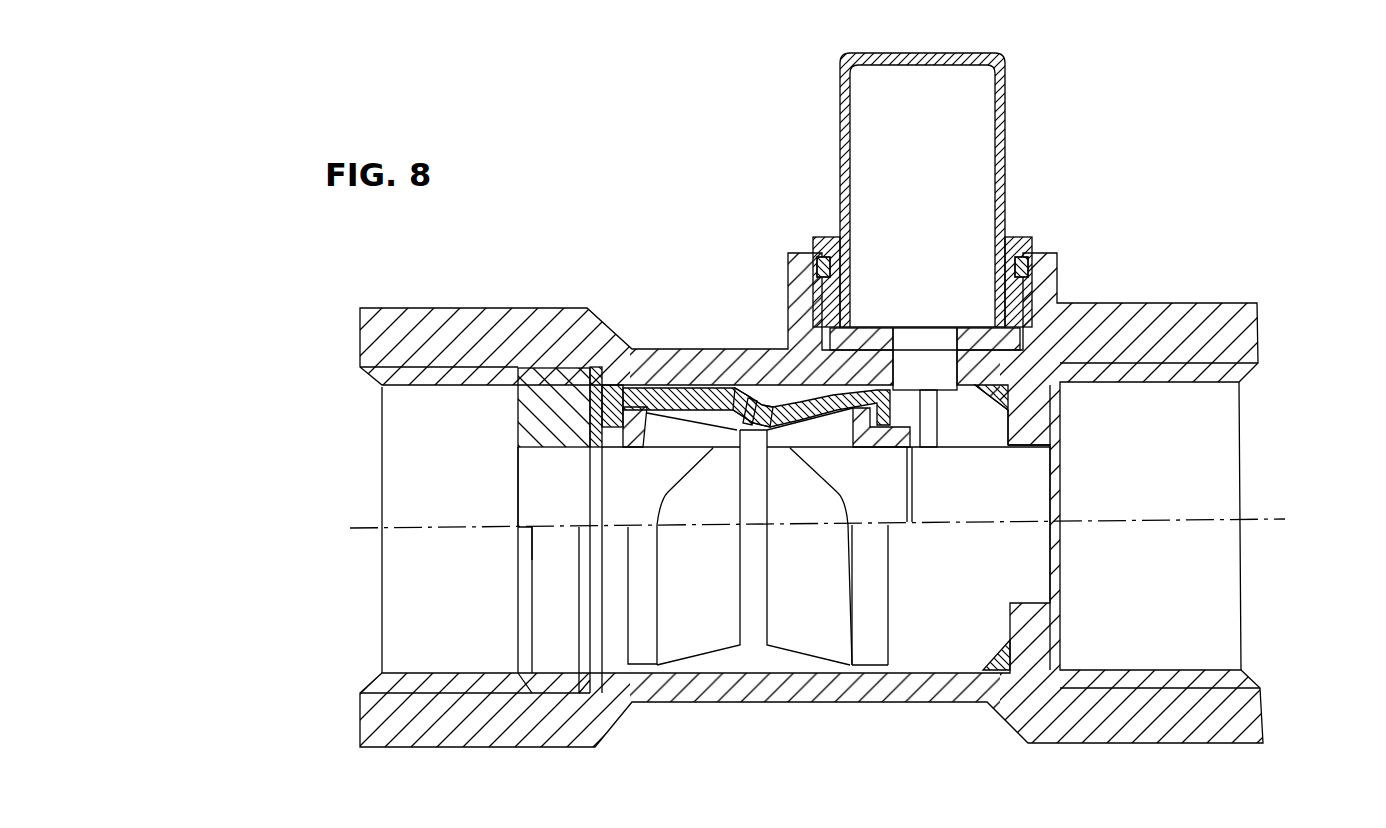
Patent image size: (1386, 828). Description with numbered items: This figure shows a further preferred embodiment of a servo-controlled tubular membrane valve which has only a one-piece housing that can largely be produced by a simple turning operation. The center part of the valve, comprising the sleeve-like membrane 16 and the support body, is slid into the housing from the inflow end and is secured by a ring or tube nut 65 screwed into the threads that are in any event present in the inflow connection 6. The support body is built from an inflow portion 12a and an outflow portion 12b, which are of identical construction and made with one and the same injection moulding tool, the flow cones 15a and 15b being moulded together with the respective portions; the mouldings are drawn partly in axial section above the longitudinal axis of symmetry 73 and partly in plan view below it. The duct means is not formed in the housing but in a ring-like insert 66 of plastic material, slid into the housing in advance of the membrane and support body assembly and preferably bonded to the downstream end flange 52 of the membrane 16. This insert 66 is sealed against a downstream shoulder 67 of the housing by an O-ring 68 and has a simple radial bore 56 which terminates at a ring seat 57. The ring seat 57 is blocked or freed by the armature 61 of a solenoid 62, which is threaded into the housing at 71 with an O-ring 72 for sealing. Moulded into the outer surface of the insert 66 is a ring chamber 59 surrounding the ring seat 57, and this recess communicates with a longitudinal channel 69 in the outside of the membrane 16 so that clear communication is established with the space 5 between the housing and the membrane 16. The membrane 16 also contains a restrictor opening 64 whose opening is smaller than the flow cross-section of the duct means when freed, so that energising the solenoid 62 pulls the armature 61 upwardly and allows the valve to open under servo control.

The inflow connection 6 is at (450, 673).
The space 5 is at (766, 395).
The sleeve-like membrane 16 is at (614, 385).
The restrictor opening 64 is at (732, 390).
The longitudinal channel 69 is at (780, 386).
The tube nut 65 is at (518, 398).
The inflow portion 12a is at (645, 446).
The flow cone 15a is at (657, 509).
The longitudinal axis of symmetry 73 is at (516, 523).
The solenoid 62 is at (1005, 90).
The O-ring 72 is at (1036, 265).
The threaded connection 71 is at (1030, 296).
The armature 61 is at (958, 350).
The ring seat 57 is at (1012, 375).
The downstream shoulder 67 is at (1012, 405).
The ring chamber 59 is at (1040, 407).
The ring-like insert 66 is at (1010, 449).
The downstream end flange 52 is at (937, 447).
The duct portion 56 is at (910, 432).
The outflow portion 12b is at (853, 449).
The flow cone 15b is at (853, 506).
The O-ring 68 is at (1005, 655).